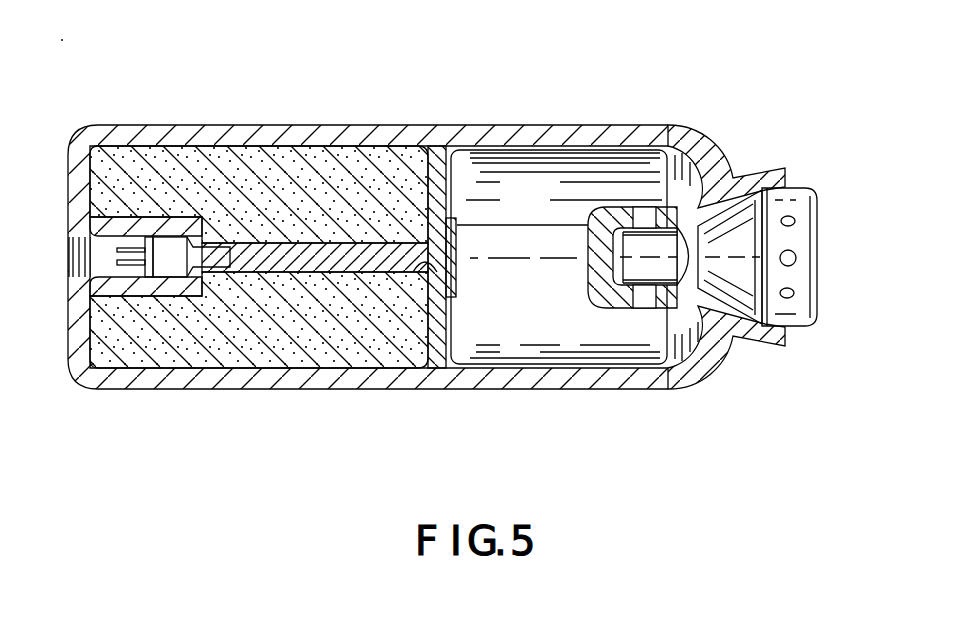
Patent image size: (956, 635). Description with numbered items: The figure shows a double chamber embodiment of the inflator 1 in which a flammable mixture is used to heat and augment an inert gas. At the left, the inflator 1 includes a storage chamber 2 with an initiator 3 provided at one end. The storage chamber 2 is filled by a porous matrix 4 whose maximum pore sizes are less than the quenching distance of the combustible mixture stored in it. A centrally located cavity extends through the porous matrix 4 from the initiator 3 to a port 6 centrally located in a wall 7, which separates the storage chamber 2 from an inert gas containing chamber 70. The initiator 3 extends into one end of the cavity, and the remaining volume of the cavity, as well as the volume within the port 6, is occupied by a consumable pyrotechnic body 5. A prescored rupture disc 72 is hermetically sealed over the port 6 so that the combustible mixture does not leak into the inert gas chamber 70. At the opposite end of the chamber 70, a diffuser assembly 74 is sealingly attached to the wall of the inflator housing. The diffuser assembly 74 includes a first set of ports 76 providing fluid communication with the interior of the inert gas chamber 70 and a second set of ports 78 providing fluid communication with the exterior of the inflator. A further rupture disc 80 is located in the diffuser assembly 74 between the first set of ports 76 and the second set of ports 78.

The inflator 1 is at (366, 106).
The storage chamber 2 is at (266, 156).
The initiator 3 is at (176, 258).
The porous matrix 4 is at (200, 152).
The consumable pyrotechnic body 5 is at (290, 252).
The port 6 is at (412, 270).
The wall 7 is at (446, 155).
The inert gas chamber 70 is at (548, 339).
The prescored rupture disc 72 is at (458, 253).
The diffuser assembly 74 is at (678, 310).
The first set of ports 76 is at (646, 216).
The second set of ports 78 is at (800, 322).
The further rupture disc 80 is at (692, 262).